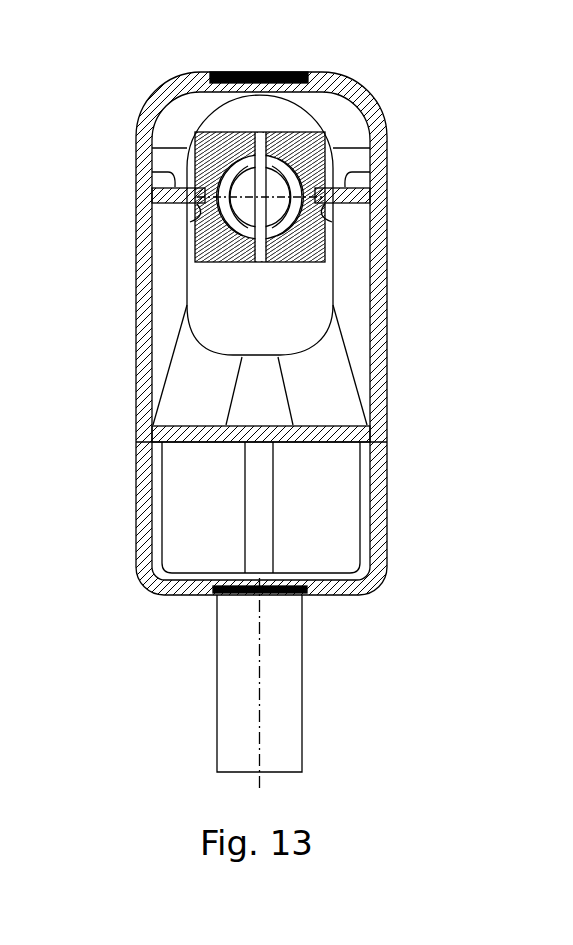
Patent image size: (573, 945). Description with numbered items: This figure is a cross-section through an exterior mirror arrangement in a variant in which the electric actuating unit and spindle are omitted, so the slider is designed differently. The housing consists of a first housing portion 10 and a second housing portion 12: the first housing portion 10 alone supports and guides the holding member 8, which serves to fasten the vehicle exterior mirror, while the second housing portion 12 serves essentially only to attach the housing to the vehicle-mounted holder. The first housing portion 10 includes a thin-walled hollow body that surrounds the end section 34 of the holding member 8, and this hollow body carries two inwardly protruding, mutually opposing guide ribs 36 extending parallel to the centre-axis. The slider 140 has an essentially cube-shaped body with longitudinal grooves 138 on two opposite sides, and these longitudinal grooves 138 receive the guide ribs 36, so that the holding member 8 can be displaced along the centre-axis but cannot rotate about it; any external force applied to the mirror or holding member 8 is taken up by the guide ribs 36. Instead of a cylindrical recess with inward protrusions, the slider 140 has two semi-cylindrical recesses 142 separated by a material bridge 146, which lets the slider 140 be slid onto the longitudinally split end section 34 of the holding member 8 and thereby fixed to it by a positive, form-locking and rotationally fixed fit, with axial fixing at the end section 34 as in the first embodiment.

The holding member 8 is at (331, 692).
The first housing portion 10 is at (405, 378).
The second housing portion 12 is at (405, 484).
The end section 34 is at (306, 172).
The guide ribs 36 is at (152, 173).
The longitudinal grooves 138 is at (197, 218).
The slider 140 is at (198, 250).
The semi-cylindrical recesses 142 is at (272, 180).
The material bridge 146 is at (272, 216).